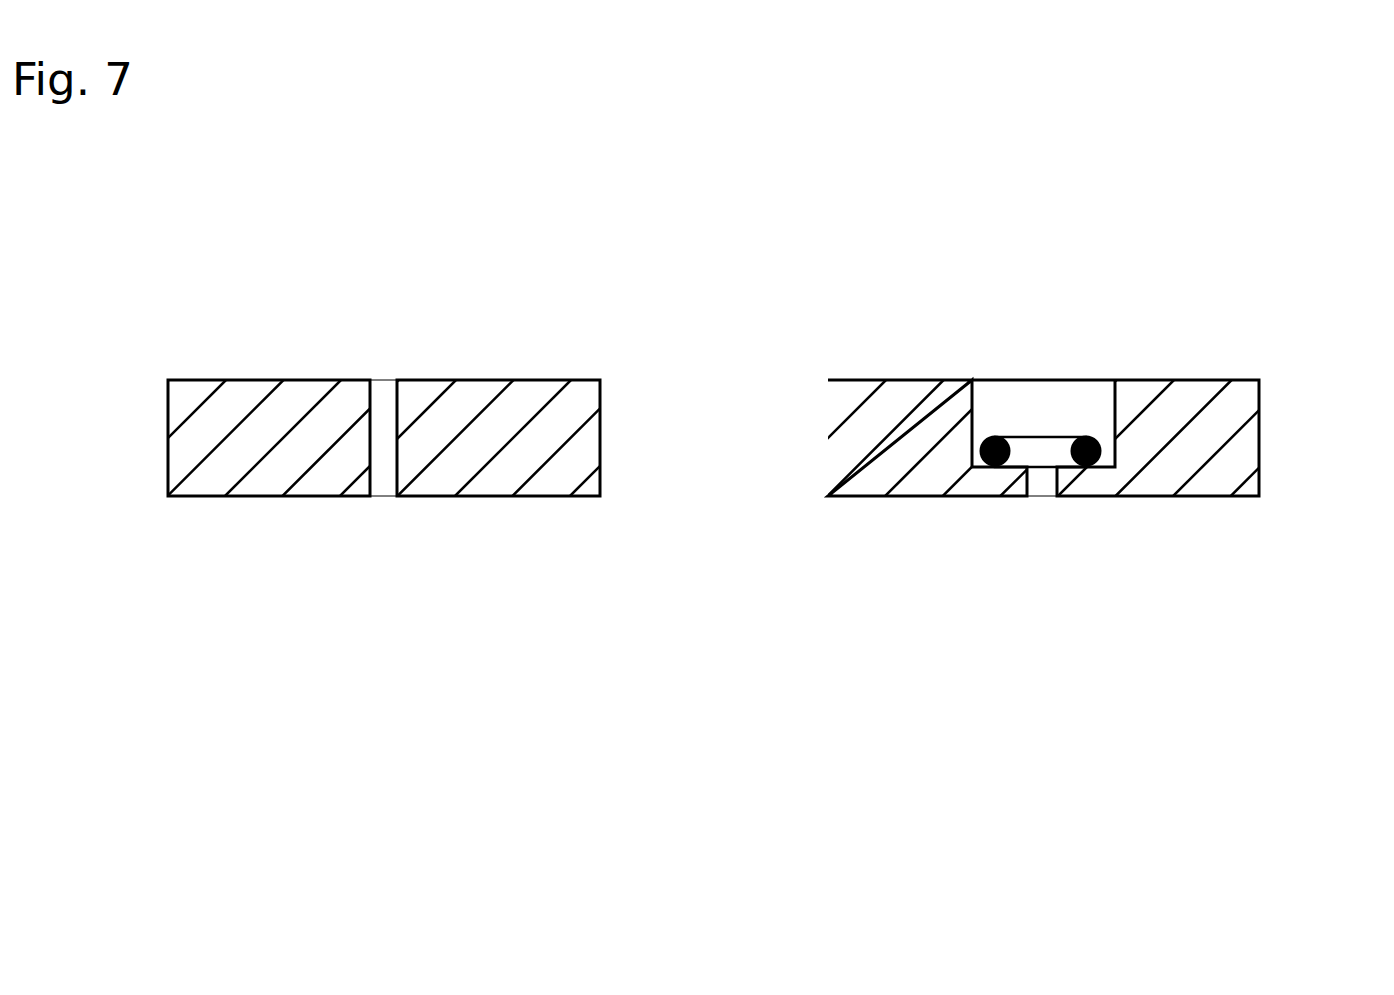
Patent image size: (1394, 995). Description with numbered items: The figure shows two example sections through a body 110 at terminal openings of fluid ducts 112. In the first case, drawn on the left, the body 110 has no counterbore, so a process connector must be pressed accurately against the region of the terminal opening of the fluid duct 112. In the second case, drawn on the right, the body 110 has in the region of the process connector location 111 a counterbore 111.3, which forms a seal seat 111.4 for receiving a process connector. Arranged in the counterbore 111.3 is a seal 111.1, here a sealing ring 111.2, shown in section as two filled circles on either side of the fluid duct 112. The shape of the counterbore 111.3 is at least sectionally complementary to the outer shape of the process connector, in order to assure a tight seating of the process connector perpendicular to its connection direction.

The body 110 is at (198, 525).
The process connector location 111 is at (412, 353).
The fluid duct 112 is at (383, 480).
The seal 111.1 is at (986, 338).
The sealing ring 111.2 is at (1097, 463).
The counterbore 111.3 is at (1072, 395).
The seal seat 111.4 is at (1043, 467).